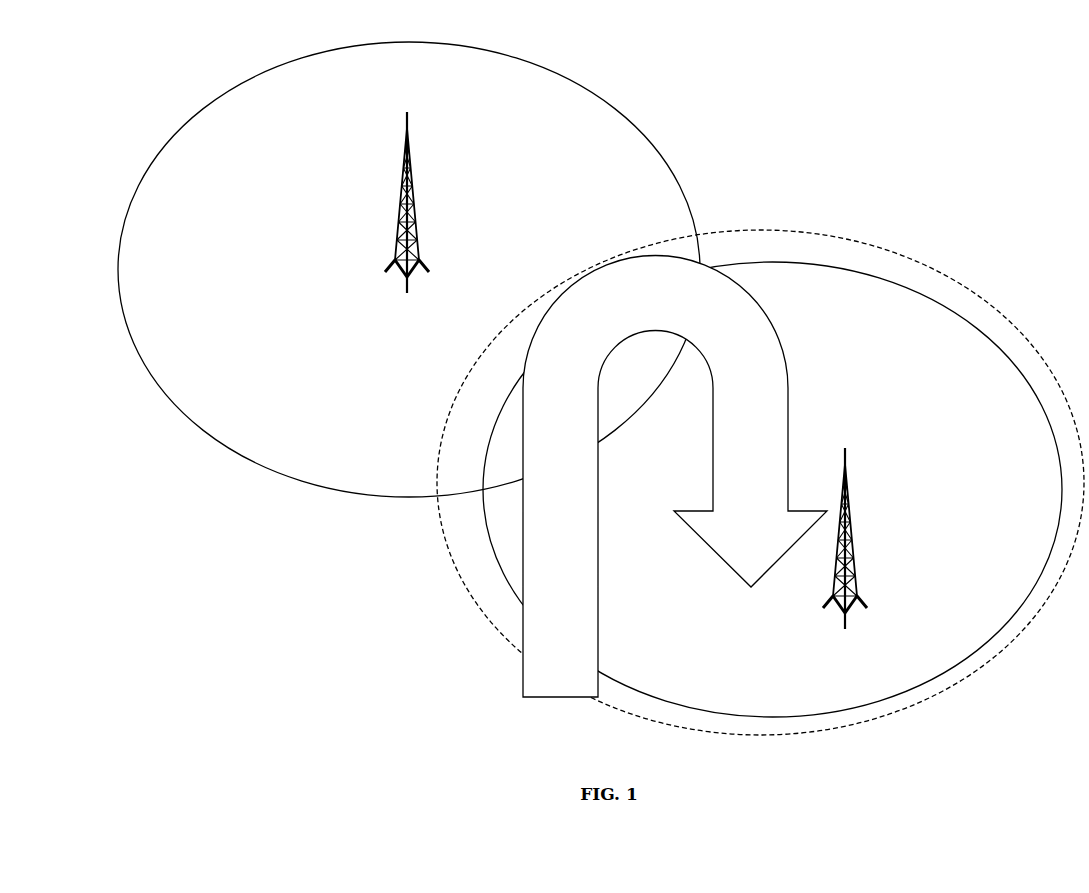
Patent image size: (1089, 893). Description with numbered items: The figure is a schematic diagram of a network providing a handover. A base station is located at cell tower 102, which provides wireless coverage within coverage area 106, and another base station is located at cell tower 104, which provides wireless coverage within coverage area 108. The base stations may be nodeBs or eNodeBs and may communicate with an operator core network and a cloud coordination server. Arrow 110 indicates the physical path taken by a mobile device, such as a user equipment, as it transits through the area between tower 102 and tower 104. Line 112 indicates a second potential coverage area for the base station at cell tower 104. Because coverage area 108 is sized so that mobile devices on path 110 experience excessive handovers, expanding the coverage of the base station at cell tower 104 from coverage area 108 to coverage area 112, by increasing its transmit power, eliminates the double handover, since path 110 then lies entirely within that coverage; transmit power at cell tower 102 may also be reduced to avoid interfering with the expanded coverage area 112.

The cell tower 102 is at (452, 183).
The cell tower 104 is at (885, 525).
The coverage area 106 is at (625, 107).
The coverage area 108 is at (1012, 362).
The arrow 110 is at (798, 360).
The line 112 is at (963, 273).